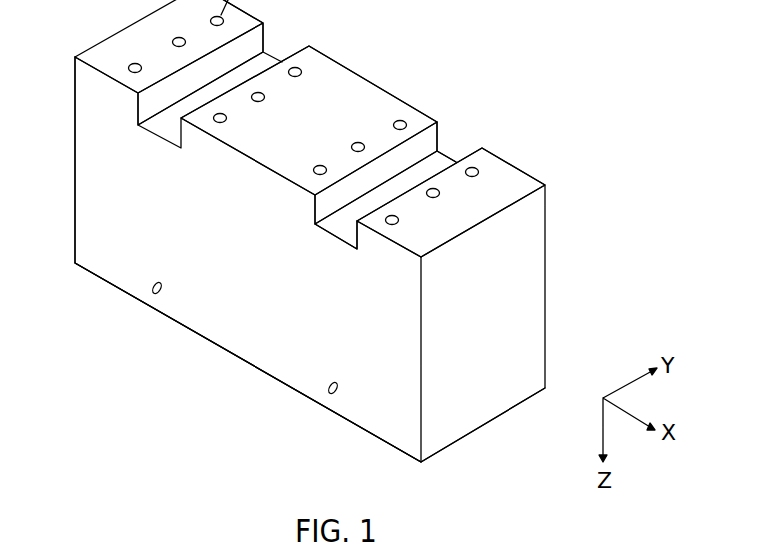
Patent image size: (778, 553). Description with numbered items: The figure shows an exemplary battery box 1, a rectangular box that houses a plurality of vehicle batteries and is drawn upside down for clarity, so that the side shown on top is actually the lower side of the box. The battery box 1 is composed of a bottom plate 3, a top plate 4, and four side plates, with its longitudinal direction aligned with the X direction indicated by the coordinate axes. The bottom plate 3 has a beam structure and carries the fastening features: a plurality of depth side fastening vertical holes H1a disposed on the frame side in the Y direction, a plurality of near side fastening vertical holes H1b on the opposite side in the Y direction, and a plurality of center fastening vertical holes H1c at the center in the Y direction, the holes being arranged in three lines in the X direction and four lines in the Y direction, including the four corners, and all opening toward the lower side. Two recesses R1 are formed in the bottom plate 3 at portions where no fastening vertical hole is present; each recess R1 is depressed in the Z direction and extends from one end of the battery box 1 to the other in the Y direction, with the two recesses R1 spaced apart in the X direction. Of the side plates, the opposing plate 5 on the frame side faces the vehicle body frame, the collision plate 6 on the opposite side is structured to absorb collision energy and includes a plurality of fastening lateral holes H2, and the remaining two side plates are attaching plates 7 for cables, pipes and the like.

The battery box 1 is at (356, 73).
The bottom plate 3 is at (376, 102).
The top plate 4 is at (290, 391).
The opposing plate 5 is at (430, 117).
The collision plate 6 is at (209, 326).
The attaching plate 7 is at (124, 23).
The depth side fastening vertical hole H1a is at (480, 176).
The near side fastening vertical hole H1b is at (402, 224).
The center fastening vertical hole H1c is at (442, 198).
The fastening lateral hole H2 is at (147, 297).
The recess R1 is at (456, 163).